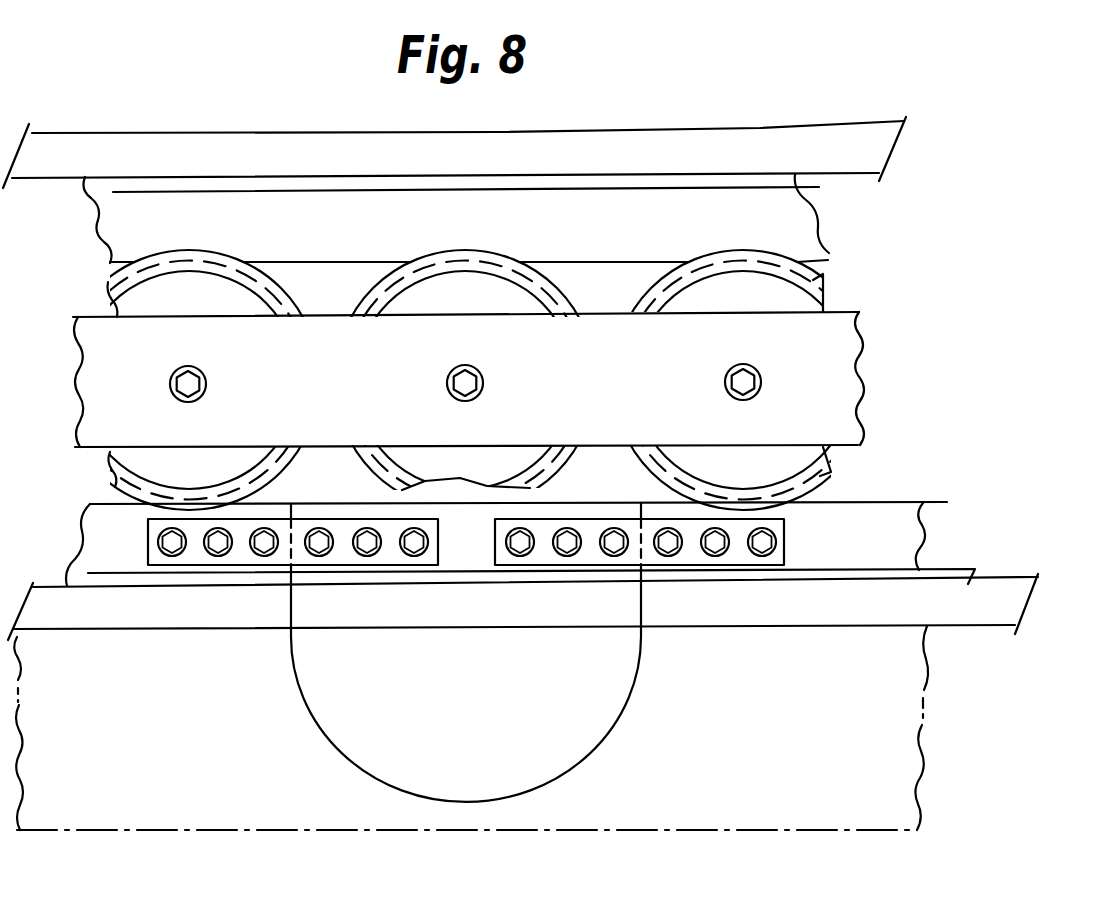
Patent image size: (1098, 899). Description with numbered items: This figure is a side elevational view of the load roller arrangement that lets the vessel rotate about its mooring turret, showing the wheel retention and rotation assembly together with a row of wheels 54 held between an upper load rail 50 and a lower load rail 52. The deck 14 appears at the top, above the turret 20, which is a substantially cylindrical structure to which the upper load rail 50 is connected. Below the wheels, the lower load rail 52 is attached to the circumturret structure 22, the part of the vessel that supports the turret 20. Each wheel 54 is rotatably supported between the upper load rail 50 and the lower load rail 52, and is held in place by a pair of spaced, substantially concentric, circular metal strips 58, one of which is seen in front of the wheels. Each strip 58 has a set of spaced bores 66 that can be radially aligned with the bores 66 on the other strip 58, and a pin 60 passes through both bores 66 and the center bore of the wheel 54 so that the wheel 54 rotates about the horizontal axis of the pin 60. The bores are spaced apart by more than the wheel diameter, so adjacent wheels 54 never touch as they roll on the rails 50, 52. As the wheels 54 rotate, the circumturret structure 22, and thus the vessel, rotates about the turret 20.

The deck 14 is at (566, 166).
The turret 20 is at (839, 140).
The circumturret structure 22 is at (977, 616).
The upper load rail 50 is at (805, 233).
The lower load rail 52 is at (893, 523).
The wheel 54 is at (815, 281).
The metal strip 58 is at (843, 395).
The pin 60 is at (752, 381).
The bore 66 is at (207, 398).